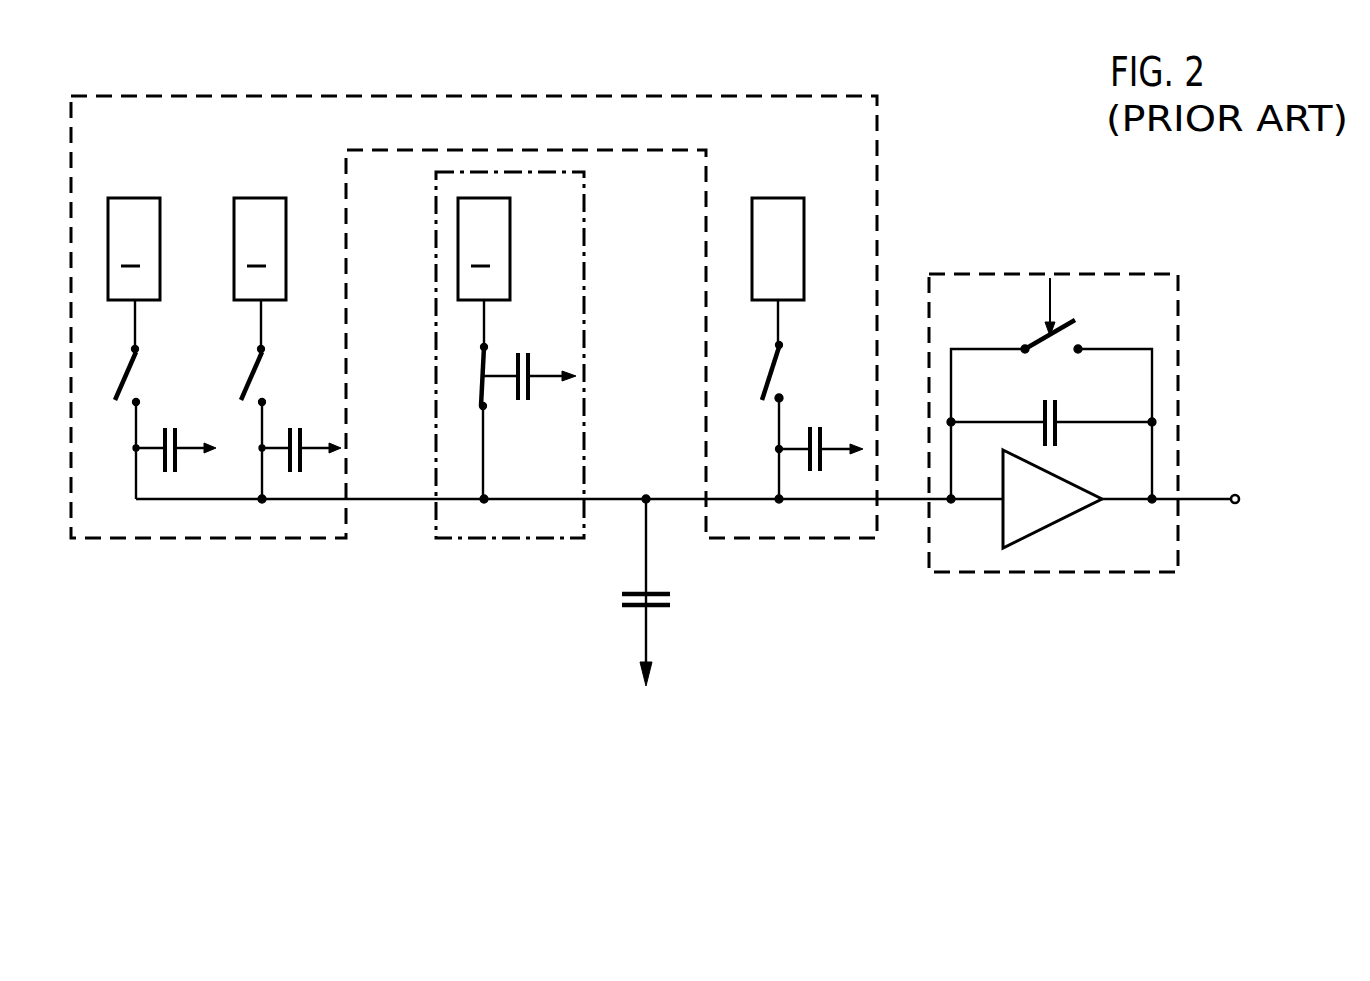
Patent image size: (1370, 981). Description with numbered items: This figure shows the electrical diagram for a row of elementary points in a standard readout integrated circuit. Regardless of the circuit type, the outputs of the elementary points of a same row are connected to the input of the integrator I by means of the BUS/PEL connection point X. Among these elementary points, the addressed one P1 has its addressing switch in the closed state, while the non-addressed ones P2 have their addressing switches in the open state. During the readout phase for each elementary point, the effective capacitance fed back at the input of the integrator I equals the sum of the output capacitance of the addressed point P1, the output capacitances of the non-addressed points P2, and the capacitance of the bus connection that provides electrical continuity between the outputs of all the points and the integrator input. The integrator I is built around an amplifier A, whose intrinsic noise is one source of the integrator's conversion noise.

The non-addressed elementary point P2 is at (222, 540).
The addressed elementary point P1 is at (503, 540).
The BUS/PEL connection point X is at (646, 497).
The integrator I is at (1053, 474).
The amplifier A is at (1044, 516).